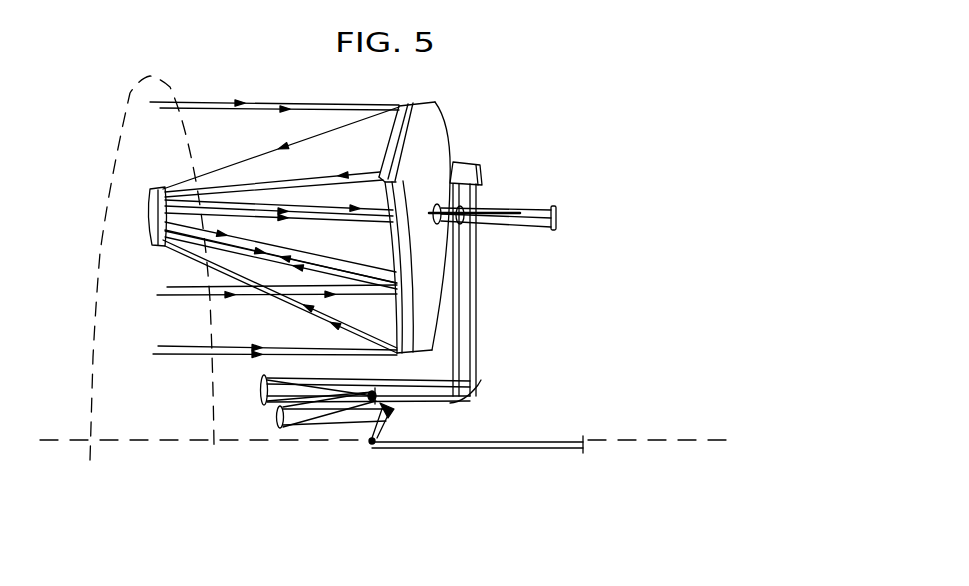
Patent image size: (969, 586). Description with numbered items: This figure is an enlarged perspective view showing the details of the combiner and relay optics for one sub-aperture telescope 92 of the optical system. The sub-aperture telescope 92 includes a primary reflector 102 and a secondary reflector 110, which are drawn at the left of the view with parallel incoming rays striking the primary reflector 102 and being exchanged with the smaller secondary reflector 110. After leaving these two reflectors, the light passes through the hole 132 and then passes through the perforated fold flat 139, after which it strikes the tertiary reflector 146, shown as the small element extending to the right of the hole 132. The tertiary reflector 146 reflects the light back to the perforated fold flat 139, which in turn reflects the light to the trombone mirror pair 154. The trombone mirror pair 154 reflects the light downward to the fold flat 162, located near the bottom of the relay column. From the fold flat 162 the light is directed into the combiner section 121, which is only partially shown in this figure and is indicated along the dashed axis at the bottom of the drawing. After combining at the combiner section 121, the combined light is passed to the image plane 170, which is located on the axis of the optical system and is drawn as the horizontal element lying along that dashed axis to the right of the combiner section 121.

The sub-aperture telescope 92 is at (678, 140).
The primary reflector 102 is at (449, 126).
The secondary reflector 110 is at (150, 194).
The trombone mirror pair 154 is at (483, 166).
The perforated fold flat 139 is at (470, 207).
The tertiary reflector 146 is at (556, 216).
The hole 132 is at (441, 190).
The fold flat 162 is at (481, 388).
The image plane 170 is at (587, 453).
The combiner section 121 is at (300, 453).